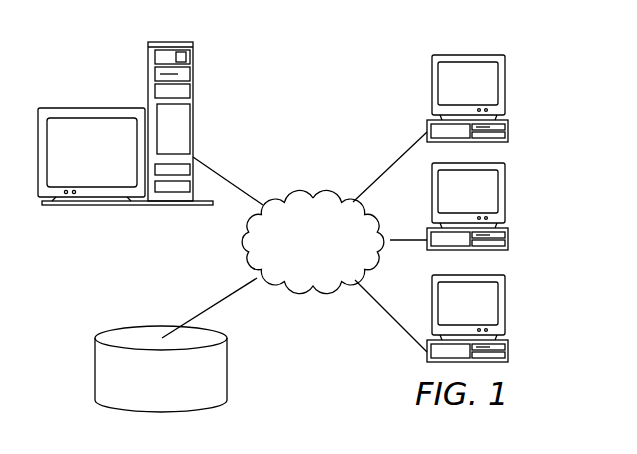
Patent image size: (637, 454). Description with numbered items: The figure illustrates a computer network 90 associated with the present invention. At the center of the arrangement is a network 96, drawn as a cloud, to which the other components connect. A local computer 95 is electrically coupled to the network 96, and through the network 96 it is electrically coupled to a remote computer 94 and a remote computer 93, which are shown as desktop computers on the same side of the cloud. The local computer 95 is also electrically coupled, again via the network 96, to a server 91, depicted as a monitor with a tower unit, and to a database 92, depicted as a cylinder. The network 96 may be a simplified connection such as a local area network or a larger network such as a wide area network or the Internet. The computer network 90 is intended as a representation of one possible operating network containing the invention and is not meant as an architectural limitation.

The computer network 90 is at (283, 76).
The server 91 is at (92, 108).
The database 92 is at (95, 370).
The remote computer 93 is at (507, 305).
The remote computer 94 is at (507, 193).
The local computer 95 is at (507, 85).
The network 96 is at (300, 253).